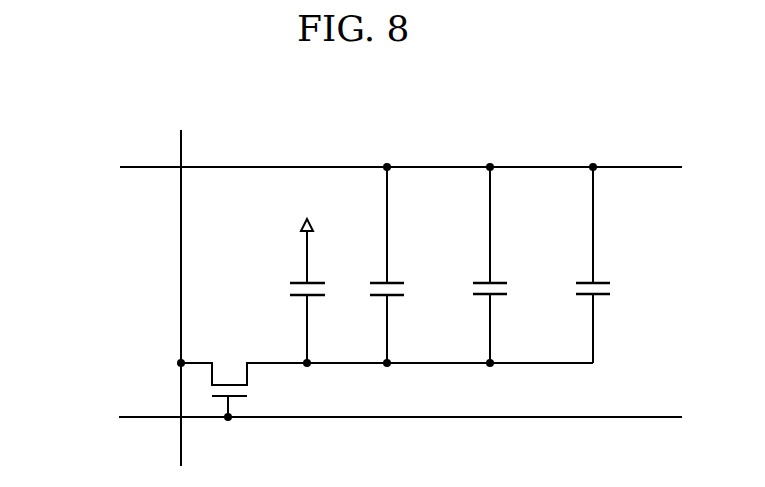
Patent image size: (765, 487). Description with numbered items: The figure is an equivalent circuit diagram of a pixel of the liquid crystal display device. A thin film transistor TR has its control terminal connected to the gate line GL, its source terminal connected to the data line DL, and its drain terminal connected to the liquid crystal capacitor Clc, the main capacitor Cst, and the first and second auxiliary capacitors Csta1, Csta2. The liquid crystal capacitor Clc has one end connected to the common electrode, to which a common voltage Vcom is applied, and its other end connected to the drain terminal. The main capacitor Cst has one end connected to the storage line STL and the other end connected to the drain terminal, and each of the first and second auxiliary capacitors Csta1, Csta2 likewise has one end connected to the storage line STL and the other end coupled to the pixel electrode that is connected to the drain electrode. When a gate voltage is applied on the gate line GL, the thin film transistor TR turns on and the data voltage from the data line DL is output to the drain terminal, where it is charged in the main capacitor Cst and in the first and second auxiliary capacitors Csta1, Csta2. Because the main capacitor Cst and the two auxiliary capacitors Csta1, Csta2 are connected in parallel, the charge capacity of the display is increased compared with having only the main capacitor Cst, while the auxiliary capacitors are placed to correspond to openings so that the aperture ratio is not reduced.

The data line DL is at (182, 284).
The storage line STL is at (378, 169).
The gate line GL is at (380, 419).
The thin film transistor TR is at (246, 396).
The liquid crystal capacitor Clc is at (288, 296).
The common voltage Vcom is at (306, 209).
The main capacitor Cst is at (397, 265).
The first auxiliary capacitor Csta1 is at (515, 265).
The second auxiliary capacitor Csta2 is at (618, 265).